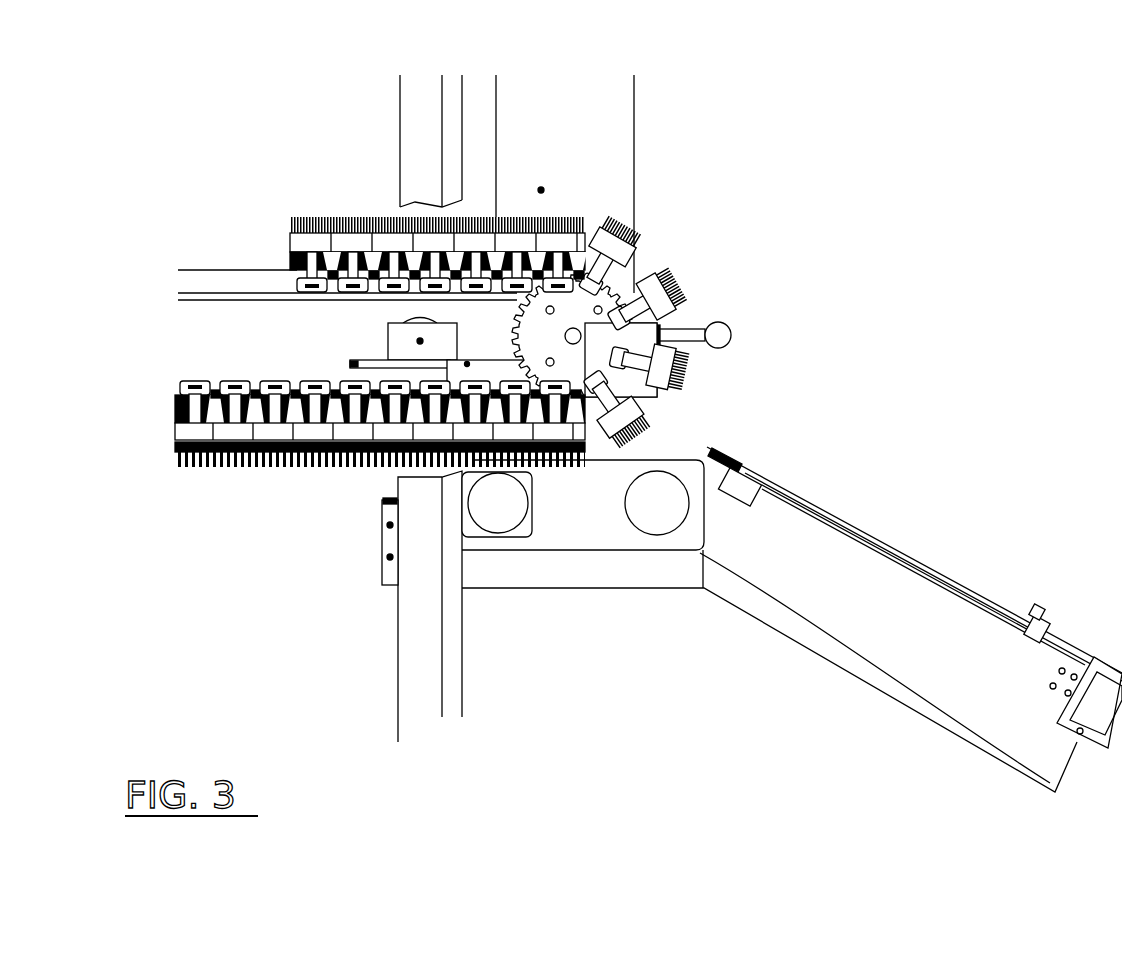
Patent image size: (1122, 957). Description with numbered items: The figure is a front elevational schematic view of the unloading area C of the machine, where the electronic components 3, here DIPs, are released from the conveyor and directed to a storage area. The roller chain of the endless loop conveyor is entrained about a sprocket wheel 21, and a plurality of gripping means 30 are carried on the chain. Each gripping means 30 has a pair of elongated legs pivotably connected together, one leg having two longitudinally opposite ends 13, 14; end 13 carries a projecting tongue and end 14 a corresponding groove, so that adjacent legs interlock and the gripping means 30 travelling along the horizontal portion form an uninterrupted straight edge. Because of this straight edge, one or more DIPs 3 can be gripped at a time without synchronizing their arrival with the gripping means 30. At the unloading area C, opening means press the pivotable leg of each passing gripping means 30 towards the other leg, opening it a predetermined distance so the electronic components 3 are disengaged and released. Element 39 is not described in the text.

The electronic components 3 is at (455, 470).
The end of the one leg 13 is at (665, 265).
The end of the one leg 14 is at (676, 320).
The sprocket wheel 21 is at (542, 333).
The gripping means 30 is at (947, 386).
The support frame 39 is at (537, 457).
The unloading area C is at (1040, 164).